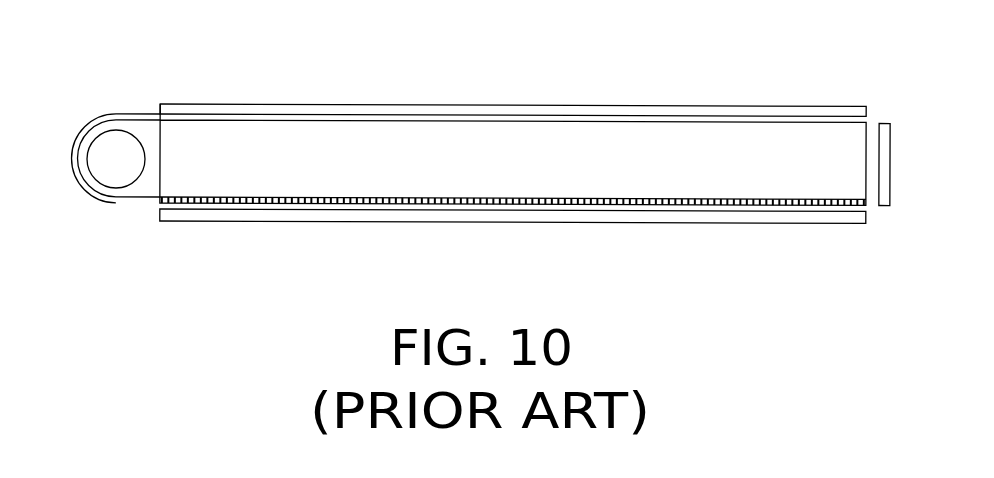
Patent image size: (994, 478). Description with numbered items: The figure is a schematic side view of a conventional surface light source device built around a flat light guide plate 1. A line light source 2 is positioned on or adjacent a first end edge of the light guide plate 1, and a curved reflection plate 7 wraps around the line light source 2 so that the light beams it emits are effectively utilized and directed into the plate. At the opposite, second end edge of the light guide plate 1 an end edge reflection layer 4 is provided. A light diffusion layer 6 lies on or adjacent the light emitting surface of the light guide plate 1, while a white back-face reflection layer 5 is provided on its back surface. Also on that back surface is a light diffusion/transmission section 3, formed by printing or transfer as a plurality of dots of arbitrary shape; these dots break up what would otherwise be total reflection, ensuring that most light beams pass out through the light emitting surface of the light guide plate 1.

The light guide plate 1 is at (785, 138).
The line light source 2 is at (106, 148).
The light diffusion/transmission section 3 is at (600, 202).
The end edge reflection layer 4 is at (885, 172).
The white back-face reflection layer 5 is at (667, 215).
The light diffusion layer 6 is at (645, 113).
The curved reflection plate 7 is at (98, 199).